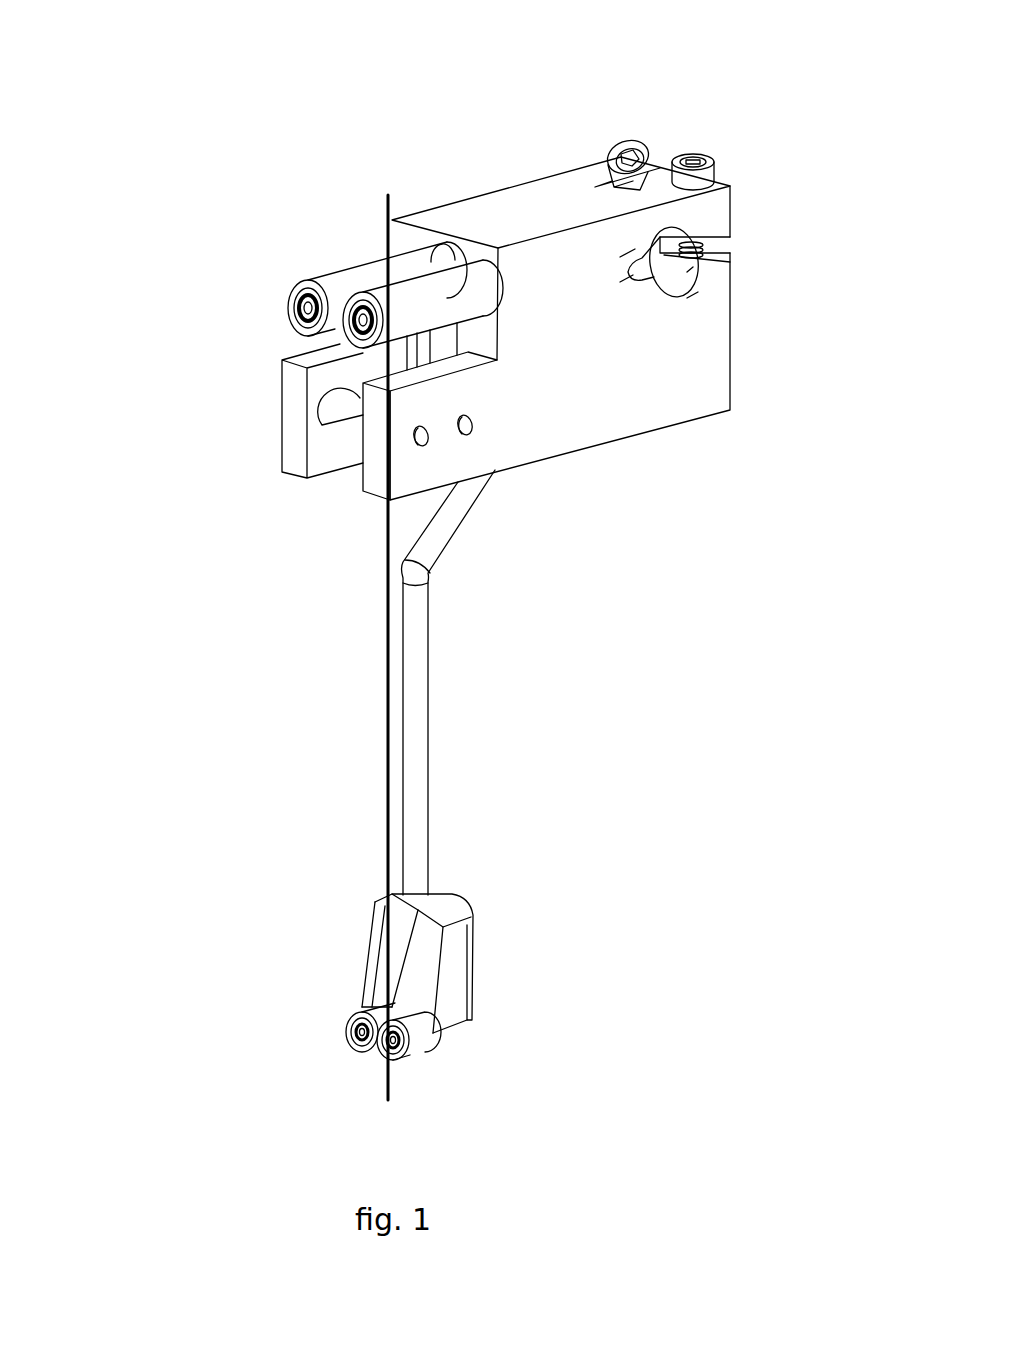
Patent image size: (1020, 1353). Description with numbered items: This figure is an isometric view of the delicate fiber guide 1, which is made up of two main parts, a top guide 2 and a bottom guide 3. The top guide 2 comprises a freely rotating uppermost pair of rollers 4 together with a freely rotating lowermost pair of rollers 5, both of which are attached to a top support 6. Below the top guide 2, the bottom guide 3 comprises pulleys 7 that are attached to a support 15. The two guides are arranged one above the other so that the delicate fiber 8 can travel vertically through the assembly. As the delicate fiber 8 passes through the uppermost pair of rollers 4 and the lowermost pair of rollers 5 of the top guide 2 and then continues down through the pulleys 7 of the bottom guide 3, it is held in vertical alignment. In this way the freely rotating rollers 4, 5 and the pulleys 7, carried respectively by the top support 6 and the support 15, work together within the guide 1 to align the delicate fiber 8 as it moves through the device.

The guide 1 is at (208, 150).
The top guide 2 is at (535, 145).
The bottom guide 3 is at (492, 1021).
The uppermost pair of rollers 4 is at (323, 273).
The lowermost pair of rollers 5 is at (343, 412).
The top support 6 is at (692, 386).
The pulleys 7 is at (350, 1043).
The delicate fiber 8 is at (382, 712).
The support 15 is at (565, 908).